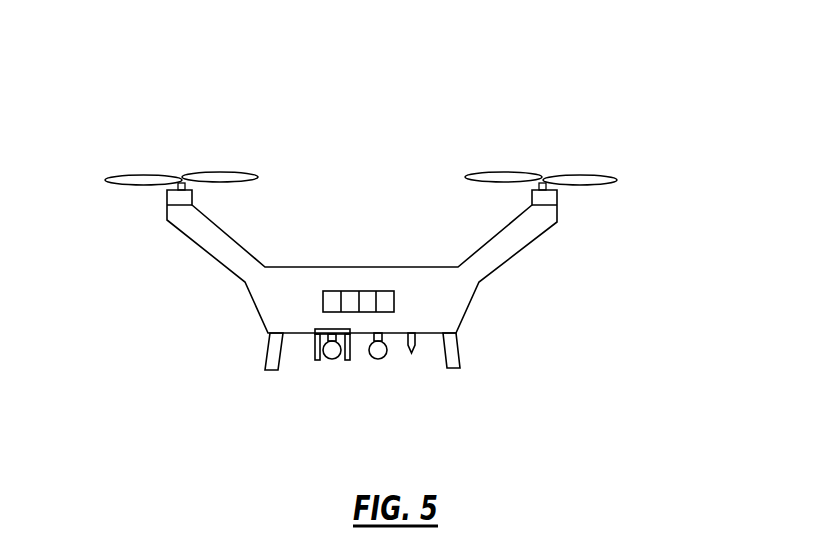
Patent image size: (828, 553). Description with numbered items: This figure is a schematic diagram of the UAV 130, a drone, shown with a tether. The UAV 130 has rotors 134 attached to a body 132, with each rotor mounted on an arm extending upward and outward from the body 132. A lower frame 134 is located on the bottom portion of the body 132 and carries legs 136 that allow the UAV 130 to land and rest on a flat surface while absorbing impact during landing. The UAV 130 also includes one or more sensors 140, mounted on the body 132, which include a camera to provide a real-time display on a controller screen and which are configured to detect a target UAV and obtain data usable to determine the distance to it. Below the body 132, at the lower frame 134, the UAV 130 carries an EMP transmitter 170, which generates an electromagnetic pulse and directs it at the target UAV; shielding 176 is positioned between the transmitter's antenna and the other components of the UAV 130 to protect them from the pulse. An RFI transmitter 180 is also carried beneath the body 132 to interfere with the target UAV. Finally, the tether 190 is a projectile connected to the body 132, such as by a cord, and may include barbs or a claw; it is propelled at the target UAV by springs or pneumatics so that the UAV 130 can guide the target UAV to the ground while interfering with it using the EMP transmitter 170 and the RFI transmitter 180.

The UAV 130 is at (461, 70).
The body 132 is at (448, 310).
The rotors 134 is at (590, 180).
The legs 136 is at (448, 348).
The sensors 140 is at (353, 303).
The EMP transmitter 170 is at (330, 357).
The shielding 176 is at (317, 330).
The RFI transmitter 180 is at (375, 357).
The tether 190 is at (410, 355).